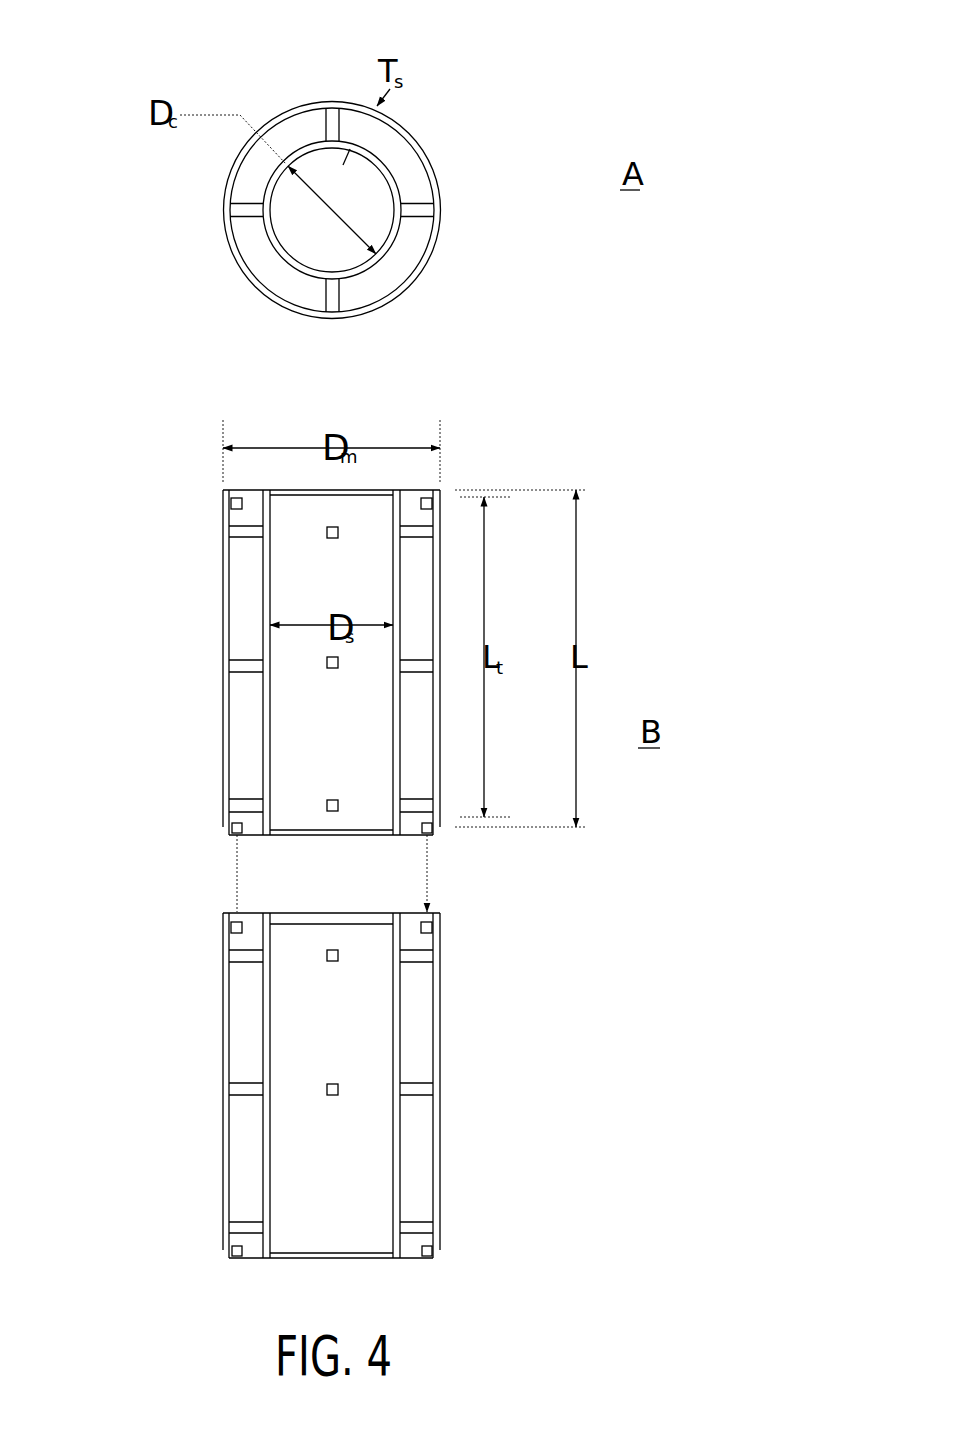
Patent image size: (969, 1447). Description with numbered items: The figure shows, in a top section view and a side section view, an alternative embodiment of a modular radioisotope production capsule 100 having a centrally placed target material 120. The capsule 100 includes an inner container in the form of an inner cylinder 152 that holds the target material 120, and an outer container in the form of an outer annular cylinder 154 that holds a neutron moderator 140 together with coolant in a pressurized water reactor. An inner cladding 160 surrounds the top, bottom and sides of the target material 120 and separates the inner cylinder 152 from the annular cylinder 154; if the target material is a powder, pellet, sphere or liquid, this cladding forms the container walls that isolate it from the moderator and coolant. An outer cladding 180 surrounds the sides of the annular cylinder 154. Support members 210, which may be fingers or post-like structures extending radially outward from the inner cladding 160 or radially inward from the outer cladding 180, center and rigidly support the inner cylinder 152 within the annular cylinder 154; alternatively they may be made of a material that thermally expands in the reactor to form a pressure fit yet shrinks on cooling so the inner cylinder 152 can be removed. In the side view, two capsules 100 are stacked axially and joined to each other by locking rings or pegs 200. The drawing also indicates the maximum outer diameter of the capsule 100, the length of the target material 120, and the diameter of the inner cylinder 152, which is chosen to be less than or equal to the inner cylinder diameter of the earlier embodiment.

The radioisotope production capsule 100 is at (505, 64).
The target material 120 is at (318, 235).
The neutron moderator 140 is at (400, 267).
The inner cylinder 152 is at (353, 146).
The outer annular cylinder 154 is at (434, 173).
The inner cladding 160 is at (317, 143).
The outer cladding 180 is at (337, 101).
The locking rings or pegs 200 is at (468, 857).
The support members 210 is at (440, 211).